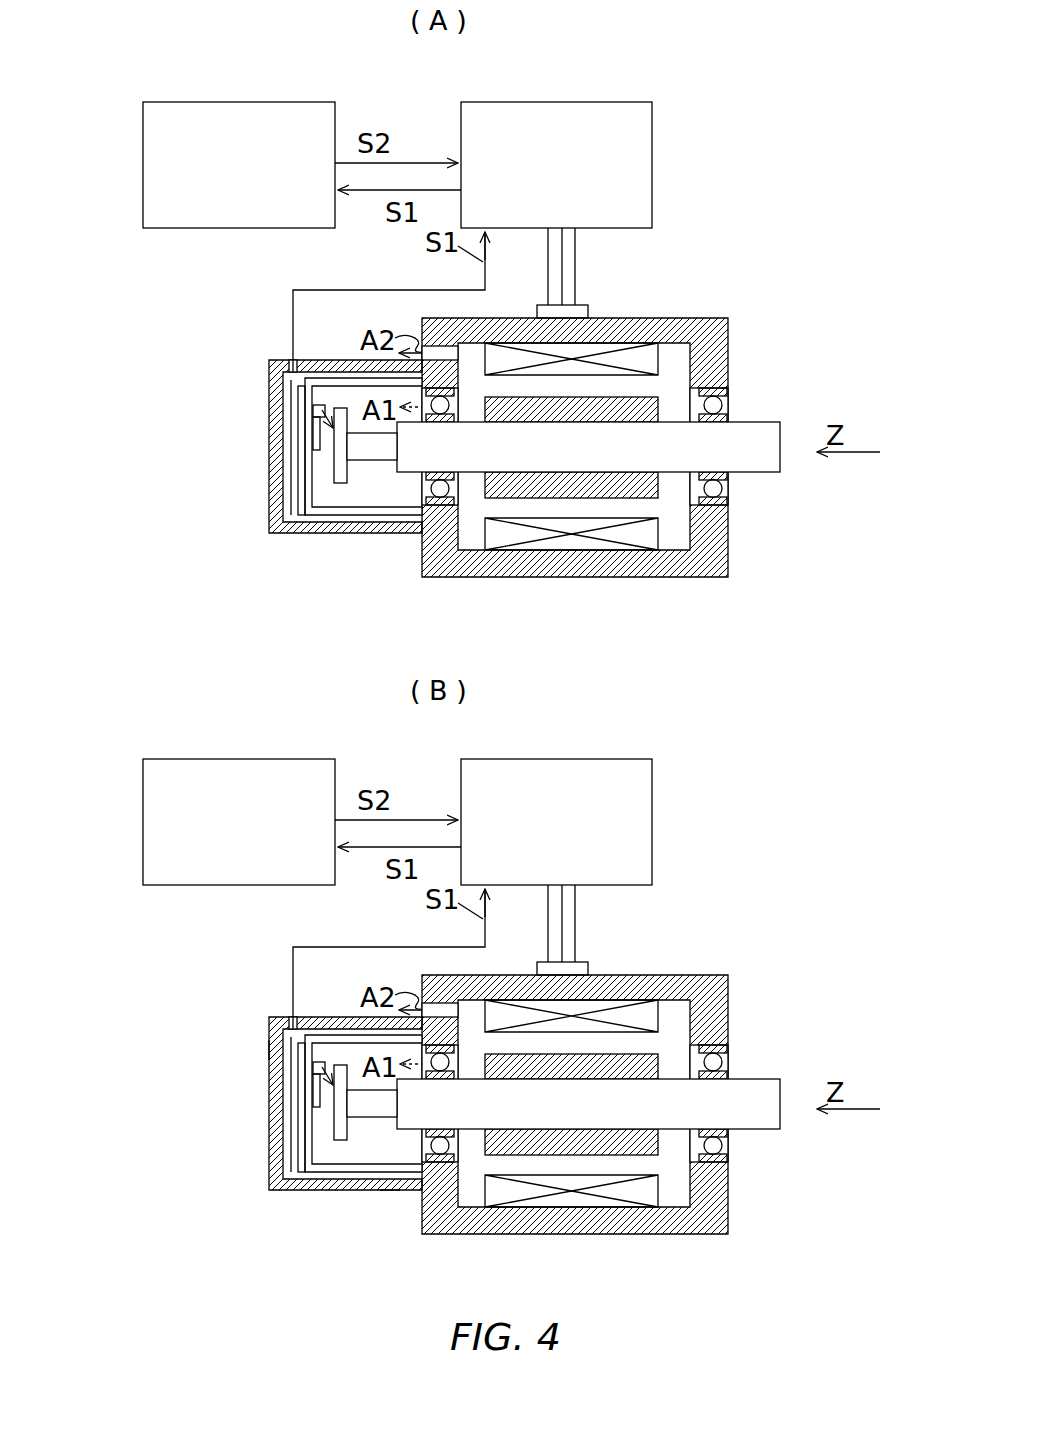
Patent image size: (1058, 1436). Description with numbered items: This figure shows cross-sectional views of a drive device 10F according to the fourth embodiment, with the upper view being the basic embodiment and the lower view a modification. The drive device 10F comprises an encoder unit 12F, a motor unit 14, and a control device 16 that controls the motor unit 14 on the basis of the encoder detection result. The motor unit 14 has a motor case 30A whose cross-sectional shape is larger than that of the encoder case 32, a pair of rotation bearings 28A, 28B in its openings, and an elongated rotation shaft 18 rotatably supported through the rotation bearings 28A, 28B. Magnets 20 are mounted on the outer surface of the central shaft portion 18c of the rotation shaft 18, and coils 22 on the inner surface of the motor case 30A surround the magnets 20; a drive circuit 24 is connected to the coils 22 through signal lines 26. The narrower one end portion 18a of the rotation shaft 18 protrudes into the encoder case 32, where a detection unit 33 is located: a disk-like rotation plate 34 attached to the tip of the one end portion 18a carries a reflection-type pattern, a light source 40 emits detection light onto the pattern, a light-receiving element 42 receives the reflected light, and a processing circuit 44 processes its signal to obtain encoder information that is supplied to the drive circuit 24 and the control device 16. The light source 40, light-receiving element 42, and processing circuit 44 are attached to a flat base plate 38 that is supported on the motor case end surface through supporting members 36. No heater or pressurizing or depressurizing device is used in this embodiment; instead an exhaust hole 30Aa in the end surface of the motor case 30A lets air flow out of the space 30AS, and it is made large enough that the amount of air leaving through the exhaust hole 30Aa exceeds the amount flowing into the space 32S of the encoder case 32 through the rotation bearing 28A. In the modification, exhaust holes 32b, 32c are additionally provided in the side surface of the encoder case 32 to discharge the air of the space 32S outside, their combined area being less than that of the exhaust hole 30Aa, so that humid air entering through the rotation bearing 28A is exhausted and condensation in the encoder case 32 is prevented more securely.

The drive device 10F is at (824, 218).
The encoder unit 12F is at (176, 402).
The motor unit 14 is at (848, 353).
The control device 16 is at (143, 162).
The rotation shaft 18 is at (758, 422).
The one end portion 18a is at (378, 457).
The shaft portion 18c is at (632, 477).
The magnets 20 is at (728, 370).
The coils 22 is at (728, 327).
The drive circuit 24 is at (652, 152).
The signal lines 26 is at (580, 284).
The rotation bearing 28A is at (448, 482).
The rotation bearing 28B is at (730, 492).
The motor case 30A is at (690, 318).
The exhaust hole 30Aa is at (432, 330).
The space 30AS is at (540, 618).
The encoder case 32 is at (272, 414).
The space 32S is at (352, 398).
The exhaust hole 32b is at (268, 1050).
The exhaust hole 32c is at (395, 1167).
The detection unit 33 is at (202, 523).
The rotation plate 34 is at (322, 535).
The supporting members 36 is at (352, 537).
The base plate 38 is at (292, 530).
The light source 40 is at (300, 392).
The light-receiving element 42 is at (290, 530).
The processing circuit 44 is at (272, 468).